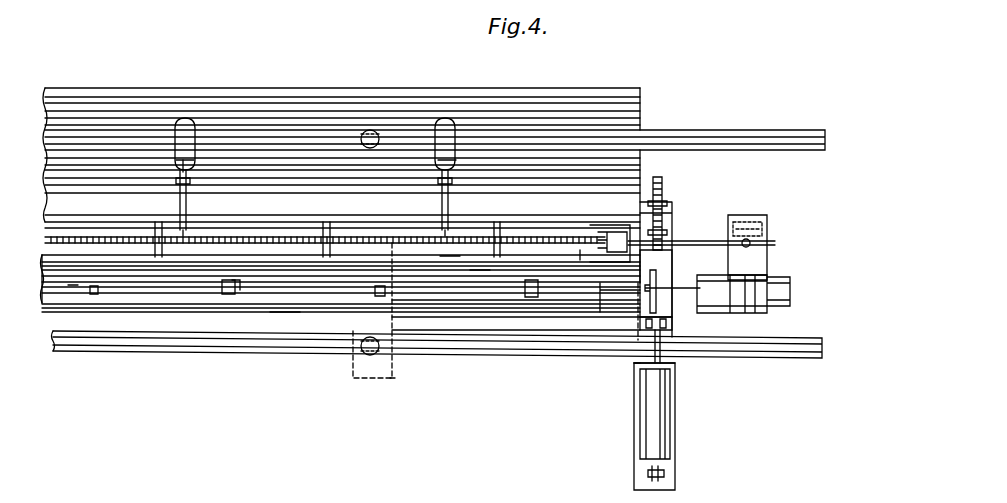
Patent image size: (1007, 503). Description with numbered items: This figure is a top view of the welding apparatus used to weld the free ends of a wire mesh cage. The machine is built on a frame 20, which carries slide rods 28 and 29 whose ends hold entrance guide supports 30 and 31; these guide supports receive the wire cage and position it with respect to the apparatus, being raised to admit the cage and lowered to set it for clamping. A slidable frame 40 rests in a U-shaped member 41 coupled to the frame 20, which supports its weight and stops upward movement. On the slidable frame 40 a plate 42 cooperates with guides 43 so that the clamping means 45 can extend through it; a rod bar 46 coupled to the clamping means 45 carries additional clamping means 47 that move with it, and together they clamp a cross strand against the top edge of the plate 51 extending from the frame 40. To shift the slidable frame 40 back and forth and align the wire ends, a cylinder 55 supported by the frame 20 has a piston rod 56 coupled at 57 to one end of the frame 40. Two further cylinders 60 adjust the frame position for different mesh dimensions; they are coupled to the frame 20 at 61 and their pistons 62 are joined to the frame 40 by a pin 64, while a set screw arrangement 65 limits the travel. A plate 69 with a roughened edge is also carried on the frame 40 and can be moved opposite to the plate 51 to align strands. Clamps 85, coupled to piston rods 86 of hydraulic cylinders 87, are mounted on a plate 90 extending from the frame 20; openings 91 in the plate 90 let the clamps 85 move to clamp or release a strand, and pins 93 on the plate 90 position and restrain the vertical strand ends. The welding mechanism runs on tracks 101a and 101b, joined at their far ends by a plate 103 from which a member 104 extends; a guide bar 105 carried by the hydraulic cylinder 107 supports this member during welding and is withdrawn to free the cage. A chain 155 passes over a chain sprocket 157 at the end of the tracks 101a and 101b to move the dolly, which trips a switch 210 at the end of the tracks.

The frame 20 is at (634, 374).
The slide rod 28 is at (372, 329).
The slide rod 29 is at (374, 130).
The guide support 30 is at (512, 342).
The guide support 31 is at (538, 137).
The slidable frame 40 is at (618, 306).
The U-shaped member 41 is at (401, 385).
The plate 42 is at (48, 300).
The guides 43 is at (238, 290).
The clamping means 45 is at (228, 298).
The rod bar 46 is at (72, 290).
The additional clamping means 47 is at (96, 296).
The plate 51 is at (284, 314).
The cylinder 55 is at (781, 291).
The piston rod 56 is at (668, 322).
The coupling 57 is at (658, 288).
The cylinders 60 is at (663, 414).
The coupling 61 is at (670, 328).
The pistons 62 is at (668, 364).
The pin 64 is at (667, 473).
The set screw arrangement 65 is at (665, 188).
The plate 69 is at (481, 263).
The clamping means 85 is at (178, 208).
The piston rods 86 is at (196, 168).
The hydraulic cylinders 87 is at (190, 118).
The plate 90 is at (289, 105).
The openings 91 is at (178, 170).
The pins 93 is at (188, 218).
The track 101a is at (178, 258).
The track 101b is at (304, 232).
The plate 103 is at (617, 232).
The member 104 is at (712, 245).
The guide bar 105 is at (765, 230).
The hydraulic cylinder 107 is at (772, 245).
The chain 155 is at (447, 244).
The chain sprocket 157 is at (581, 249).
The switch 210 is at (621, 248).